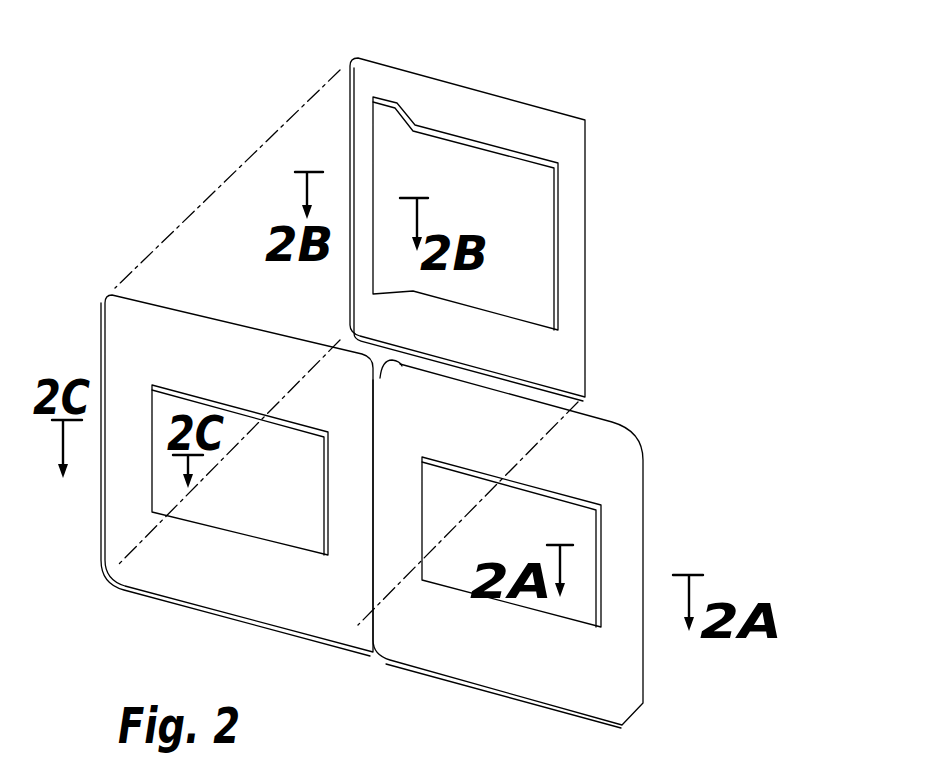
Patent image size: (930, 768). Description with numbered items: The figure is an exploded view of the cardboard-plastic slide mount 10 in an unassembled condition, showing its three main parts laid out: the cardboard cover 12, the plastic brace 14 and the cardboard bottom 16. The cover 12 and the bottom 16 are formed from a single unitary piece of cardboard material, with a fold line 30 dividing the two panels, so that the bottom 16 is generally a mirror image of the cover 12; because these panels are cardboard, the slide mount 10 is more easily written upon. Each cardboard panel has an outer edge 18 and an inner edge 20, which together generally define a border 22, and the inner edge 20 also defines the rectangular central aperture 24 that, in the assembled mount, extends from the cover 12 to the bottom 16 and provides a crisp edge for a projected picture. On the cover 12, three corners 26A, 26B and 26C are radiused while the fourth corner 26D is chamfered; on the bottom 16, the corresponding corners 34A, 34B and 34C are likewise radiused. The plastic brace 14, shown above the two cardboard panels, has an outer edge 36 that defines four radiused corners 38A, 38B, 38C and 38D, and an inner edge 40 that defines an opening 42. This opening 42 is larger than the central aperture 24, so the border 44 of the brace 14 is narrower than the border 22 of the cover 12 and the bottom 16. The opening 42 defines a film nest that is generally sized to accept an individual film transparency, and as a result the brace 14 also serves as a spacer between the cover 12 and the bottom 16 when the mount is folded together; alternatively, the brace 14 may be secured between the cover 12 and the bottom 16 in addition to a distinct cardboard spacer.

The slide mount 10 is at (697, 205).
The cardboard cover 12 is at (474, 681).
The brace 14 is at (499, 97).
The bottom 16 is at (182, 603).
The outer edge 18 is at (217, 321).
The inner edge 20 is at (293, 424).
The border 22 is at (270, 600).
The central aperture 24 is at (298, 511).
The corner 26A is at (641, 442).
The corner 26B is at (397, 363).
The corner 26C is at (374, 652).
The corner 26D is at (643, 705).
The fold line 30 is at (376, 619).
The corner 34A is at (104, 296).
The corner 34B is at (368, 358).
The corner 34C is at (357, 652).
The outer edge 36 is at (450, 84).
The radiused corner 38A is at (588, 120).
The radiused corner 38B is at (355, 58).
The radiused corner 38C is at (357, 333).
The radiused corner 38D is at (587, 396).
The inner edge 40 is at (556, 232).
The opening 42 is at (488, 218).
The border 44 is at (478, 328).